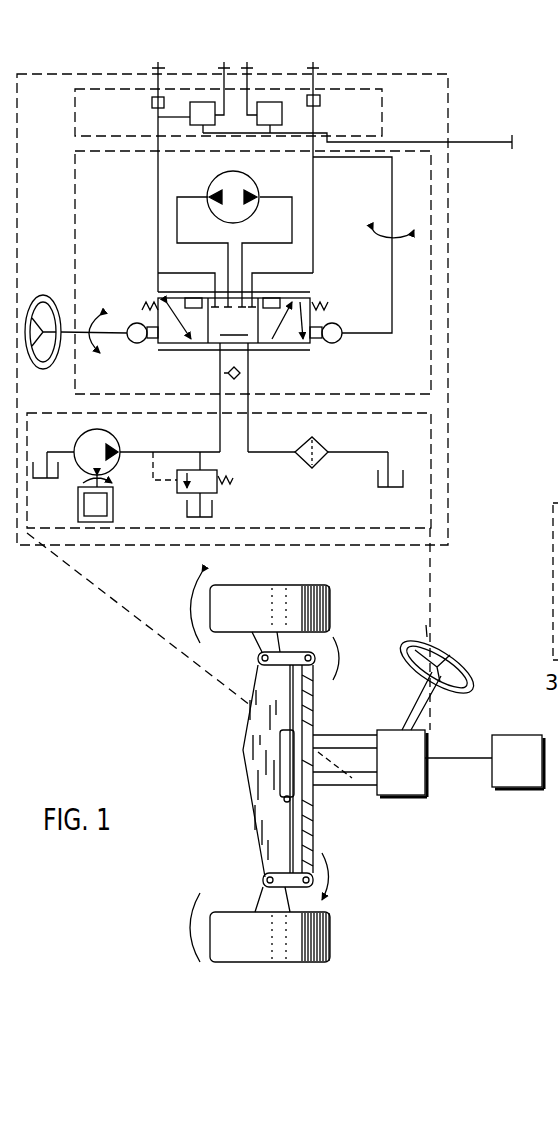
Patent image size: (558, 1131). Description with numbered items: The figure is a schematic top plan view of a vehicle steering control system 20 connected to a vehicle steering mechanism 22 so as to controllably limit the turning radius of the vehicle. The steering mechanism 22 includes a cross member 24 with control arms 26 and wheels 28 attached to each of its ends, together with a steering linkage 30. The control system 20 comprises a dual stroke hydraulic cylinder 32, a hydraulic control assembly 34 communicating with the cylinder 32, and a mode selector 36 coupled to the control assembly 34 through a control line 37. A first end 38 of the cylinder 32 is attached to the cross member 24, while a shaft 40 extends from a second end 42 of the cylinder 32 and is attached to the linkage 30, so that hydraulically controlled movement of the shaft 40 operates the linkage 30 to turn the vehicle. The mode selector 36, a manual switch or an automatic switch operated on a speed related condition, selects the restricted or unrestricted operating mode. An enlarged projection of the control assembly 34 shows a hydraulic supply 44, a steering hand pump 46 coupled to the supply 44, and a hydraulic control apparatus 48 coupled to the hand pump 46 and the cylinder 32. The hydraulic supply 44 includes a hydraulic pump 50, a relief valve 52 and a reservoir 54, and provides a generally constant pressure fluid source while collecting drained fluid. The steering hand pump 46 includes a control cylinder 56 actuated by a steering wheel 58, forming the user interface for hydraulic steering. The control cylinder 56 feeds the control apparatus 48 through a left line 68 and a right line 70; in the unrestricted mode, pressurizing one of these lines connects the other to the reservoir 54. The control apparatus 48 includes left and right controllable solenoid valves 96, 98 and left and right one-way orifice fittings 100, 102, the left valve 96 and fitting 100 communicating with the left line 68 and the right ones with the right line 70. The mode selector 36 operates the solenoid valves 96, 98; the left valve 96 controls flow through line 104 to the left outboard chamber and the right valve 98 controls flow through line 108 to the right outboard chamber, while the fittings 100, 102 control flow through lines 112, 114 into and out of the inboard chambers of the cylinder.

The vehicle steering control system 20 is at (428, 836).
The vehicle steering mechanism 22 is at (242, 788).
The cross member 24 is at (270, 848).
The control arms 26 is at (265, 642).
The wheels 28 is at (312, 602).
The steering linkage 30 is at (320, 872).
The hydraulic cylinder 32 is at (367, 620).
The hydraulic control assembly 34 is at (452, 346).
The mode selector 36 is at (557, 718).
The control line 37 is at (476, 144).
The first end 38 is at (285, 800).
The shaft 40 is at (288, 693).
The second end 42 is at (277, 722).
The hydraulic supply 44 is at (433, 460).
The steering hand pump 46 is at (436, 272).
The hydraulic control apparatus 48 is at (387, 112).
The hydraulic pump 50 is at (110, 433).
The relief valve 52 is at (236, 486).
The reservoir 54 is at (50, 480).
The control cylinder 56 is at (296, 351).
The steering wheel 58 is at (42, 297).
The left line 68 is at (325, 366).
The right line 70 is at (314, 223).
The left controllable solenoid valve 96 is at (208, 196).
The right controllable solenoid valve 98 is at (265, 194).
The left one-way orifice fitting 100 is at (152, 105).
The right one-way orifice fitting 102 is at (322, 100).
The line 104 is at (202, 120).
The line 108 is at (275, 118).
The line 112 is at (152, 80).
The line 114 is at (312, 78).